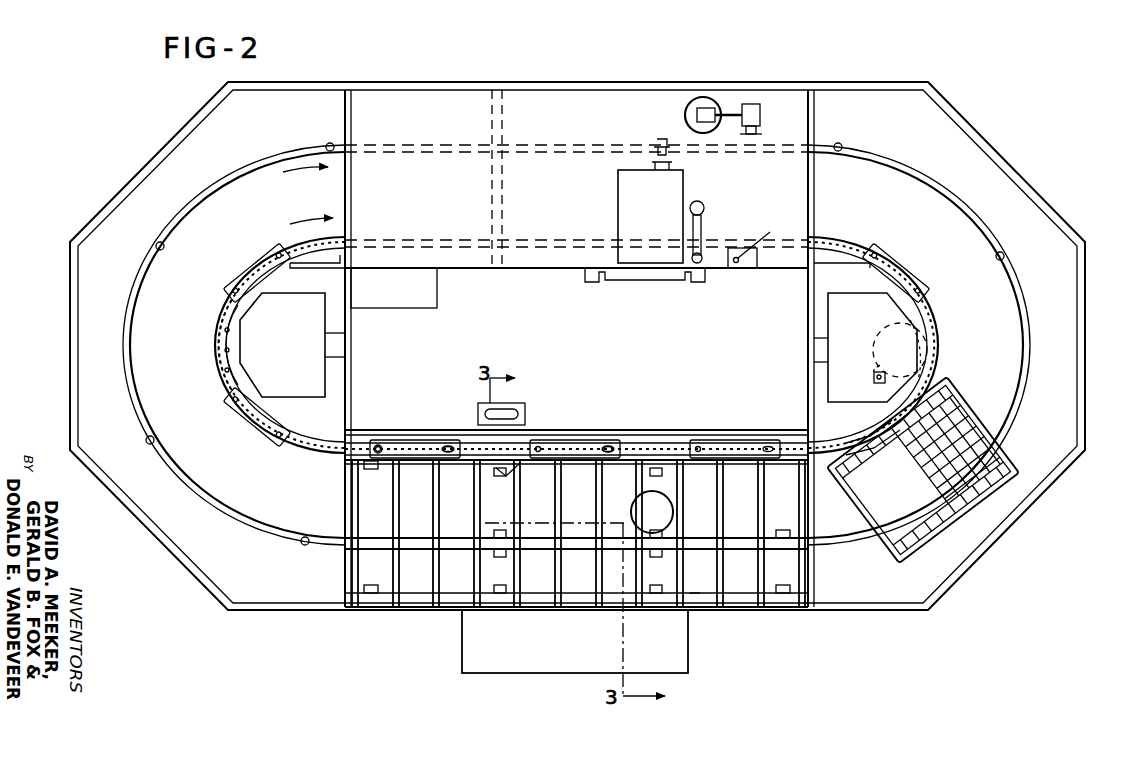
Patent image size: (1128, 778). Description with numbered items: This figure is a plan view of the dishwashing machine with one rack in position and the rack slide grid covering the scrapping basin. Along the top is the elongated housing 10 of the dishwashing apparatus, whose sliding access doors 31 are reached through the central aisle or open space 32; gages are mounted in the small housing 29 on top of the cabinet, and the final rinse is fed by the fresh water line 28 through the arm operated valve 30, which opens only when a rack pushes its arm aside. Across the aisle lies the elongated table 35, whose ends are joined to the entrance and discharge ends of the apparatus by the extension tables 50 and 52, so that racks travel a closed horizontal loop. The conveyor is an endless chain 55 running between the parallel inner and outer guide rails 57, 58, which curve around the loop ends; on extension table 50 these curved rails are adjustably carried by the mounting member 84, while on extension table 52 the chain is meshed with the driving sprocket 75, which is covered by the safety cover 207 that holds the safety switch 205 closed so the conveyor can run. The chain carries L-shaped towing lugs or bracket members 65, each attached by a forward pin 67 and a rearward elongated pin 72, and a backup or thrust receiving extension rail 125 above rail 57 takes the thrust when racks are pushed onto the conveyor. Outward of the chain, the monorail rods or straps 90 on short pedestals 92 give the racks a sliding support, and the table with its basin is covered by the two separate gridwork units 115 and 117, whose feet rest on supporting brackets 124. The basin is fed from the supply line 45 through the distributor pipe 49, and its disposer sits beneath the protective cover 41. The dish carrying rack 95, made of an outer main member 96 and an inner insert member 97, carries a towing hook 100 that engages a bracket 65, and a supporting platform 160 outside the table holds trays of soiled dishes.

The housing 10 is at (560, 86).
The extension table 50 is at (84, 322).
The extension table 52 is at (1050, 322).
The monorail rods or straps 90 is at (198, 198).
The pedestals 92 is at (158, 244).
The towing lugs or bracket members 65 is at (254, 278).
The outer guide rail 58 is at (218, 338).
The inner guide rail 57 is at (238, 340).
The endless chain 55 is at (220, 376).
The mounting member 84 is at (306, 322).
The safety cover 207 is at (872, 324).
The safety switch 205 is at (881, 353).
The driving sprocket 75 is at (925, 332).
The small housing 29 is at (618, 214).
The fresh water line 28 is at (701, 240).
The arm operated valve 30 is at (748, 270).
The sliding access doors 31 is at (602, 278).
The central aisle or open space 32 is at (598, 359).
The supply line 45 is at (505, 408).
The forward bolt or pin 67 is at (378, 442).
The elongated pin 72 is at (450, 444).
The backup or thrust receiving extension rail 125 is at (610, 445).
The elongated table 35 is at (410, 608).
The supporting brackets 124 is at (368, 466).
The distributor pipe 49 is at (504, 472).
The protective cover 41 is at (670, 514).
The gridwork 115 is at (804, 500).
The gridwork 117 is at (690, 578).
The supporting platform 160 is at (540, 668).
The outer main member 96 is at (984, 522).
The inner or insert member 97 is at (950, 458).
The dish carrying rack 95 is at (950, 536).
The towing hook 100 is at (856, 440).